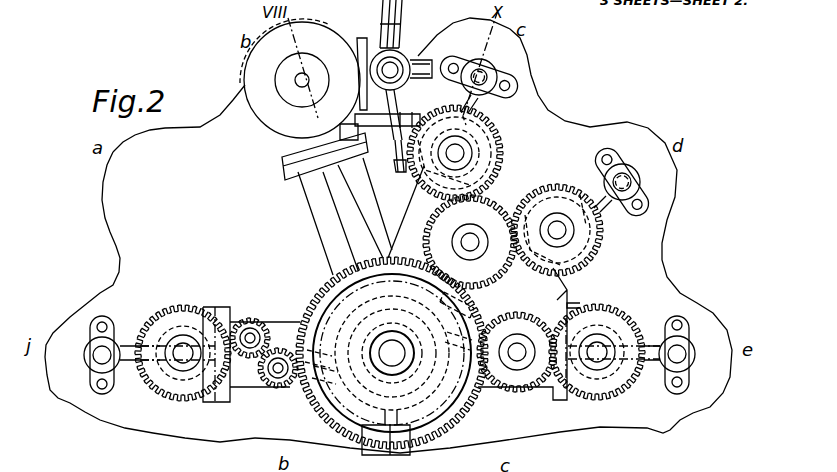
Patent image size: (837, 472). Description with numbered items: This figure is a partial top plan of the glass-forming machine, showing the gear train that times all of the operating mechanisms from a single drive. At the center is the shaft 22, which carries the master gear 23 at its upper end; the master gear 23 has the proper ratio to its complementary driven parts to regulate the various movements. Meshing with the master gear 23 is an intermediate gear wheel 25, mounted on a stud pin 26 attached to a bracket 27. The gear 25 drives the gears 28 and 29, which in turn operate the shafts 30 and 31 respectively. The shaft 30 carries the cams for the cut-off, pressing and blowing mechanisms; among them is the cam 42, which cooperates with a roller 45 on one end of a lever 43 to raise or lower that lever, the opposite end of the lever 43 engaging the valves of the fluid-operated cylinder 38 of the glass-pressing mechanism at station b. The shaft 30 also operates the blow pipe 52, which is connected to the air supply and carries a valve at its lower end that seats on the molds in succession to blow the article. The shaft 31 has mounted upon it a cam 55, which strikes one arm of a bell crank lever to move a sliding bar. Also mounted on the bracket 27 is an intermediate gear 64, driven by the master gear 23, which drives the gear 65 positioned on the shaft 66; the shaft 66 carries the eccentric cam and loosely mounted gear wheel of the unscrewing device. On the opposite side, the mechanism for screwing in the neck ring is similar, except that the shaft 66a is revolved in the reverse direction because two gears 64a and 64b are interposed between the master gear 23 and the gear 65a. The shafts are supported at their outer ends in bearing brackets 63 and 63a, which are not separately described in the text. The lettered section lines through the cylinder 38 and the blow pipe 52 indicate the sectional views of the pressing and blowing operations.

The shaft 22 is at (390, 354).
The master gear 23 is at (450, 404).
The intermediate gear wheel 25 is at (470, 242).
The stud pin 26 is at (466, 241).
The bracket 27 is at (517, 337).
The gear 28 is at (500, 158).
The gear 29 is at (596, 255).
The shaft 30 is at (458, 152).
The shaft 31 is at (560, 230).
The fluid-operated cylinder 38 is at (270, 112).
The cam 42 is at (420, 174).
The lever 43 is at (398, 140).
The roller 45 is at (404, 172).
The blow pipe 52 is at (485, 75).
The cam 55 is at (584, 262).
The bearing bracket 63 is at (680, 350).
The bearing bracket 63a is at (100, 356).
The intermediate gear 64 is at (524, 380).
The gear 64a is at (275, 386).
The gear 64b is at (252, 320).
The gear 65 is at (624, 378).
The gear 65a is at (188, 388).
The shaft 66 is at (597, 356).
The shaft 66a is at (183, 358).